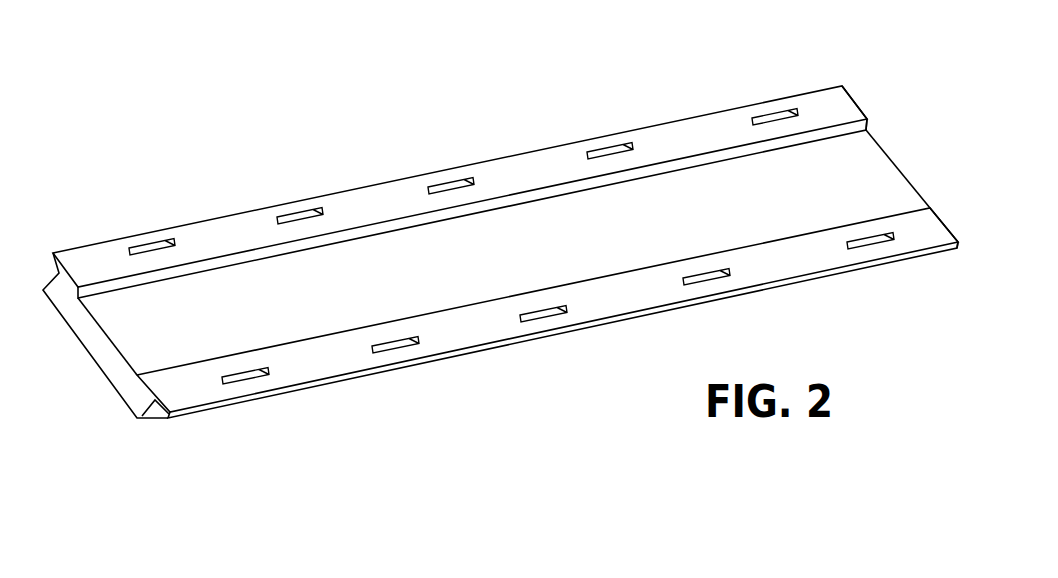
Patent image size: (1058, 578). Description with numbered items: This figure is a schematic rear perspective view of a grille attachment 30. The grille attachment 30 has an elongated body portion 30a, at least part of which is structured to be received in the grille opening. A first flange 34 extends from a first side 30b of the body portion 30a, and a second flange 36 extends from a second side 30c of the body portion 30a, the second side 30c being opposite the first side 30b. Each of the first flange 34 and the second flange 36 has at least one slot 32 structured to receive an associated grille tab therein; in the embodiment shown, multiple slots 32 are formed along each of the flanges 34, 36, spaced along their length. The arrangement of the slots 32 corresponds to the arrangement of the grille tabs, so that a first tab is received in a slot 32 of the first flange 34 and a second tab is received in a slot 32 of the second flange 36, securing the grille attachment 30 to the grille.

The grille attachment 30 is at (500, 243).
The body portion 30a is at (95, 347).
The first side 30b is at (856, 110).
The second side 30c is at (900, 208).
The slot 32 is at (152, 252).
The first flange 34 is at (243, 232).
The second flange 36 is at (613, 307).